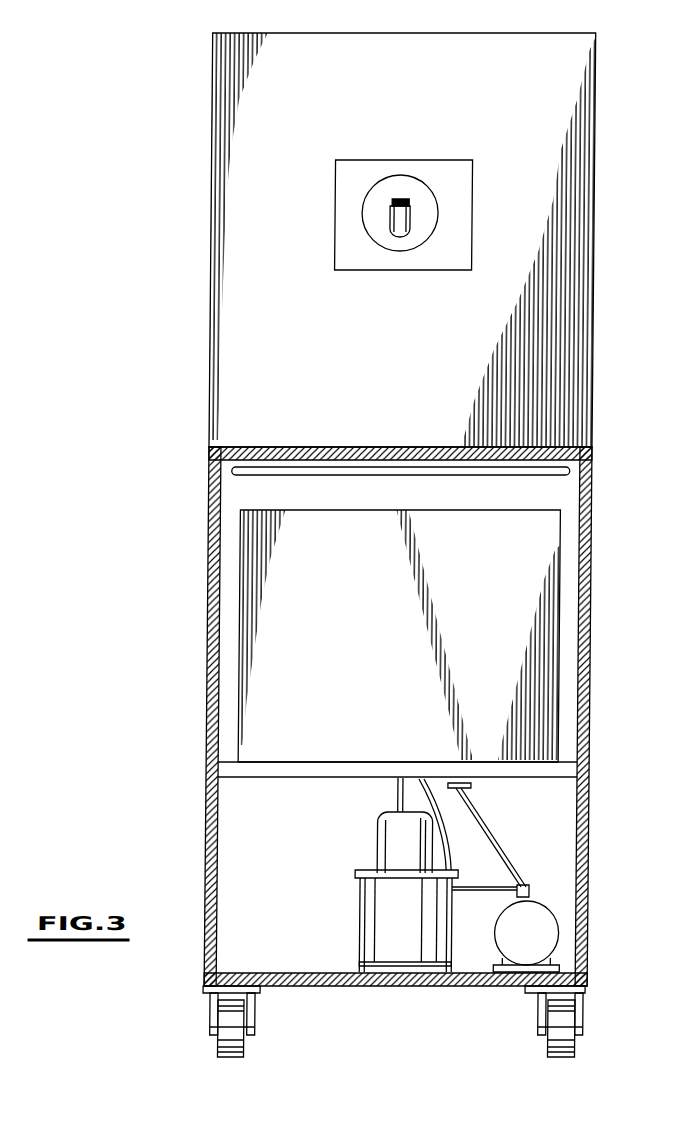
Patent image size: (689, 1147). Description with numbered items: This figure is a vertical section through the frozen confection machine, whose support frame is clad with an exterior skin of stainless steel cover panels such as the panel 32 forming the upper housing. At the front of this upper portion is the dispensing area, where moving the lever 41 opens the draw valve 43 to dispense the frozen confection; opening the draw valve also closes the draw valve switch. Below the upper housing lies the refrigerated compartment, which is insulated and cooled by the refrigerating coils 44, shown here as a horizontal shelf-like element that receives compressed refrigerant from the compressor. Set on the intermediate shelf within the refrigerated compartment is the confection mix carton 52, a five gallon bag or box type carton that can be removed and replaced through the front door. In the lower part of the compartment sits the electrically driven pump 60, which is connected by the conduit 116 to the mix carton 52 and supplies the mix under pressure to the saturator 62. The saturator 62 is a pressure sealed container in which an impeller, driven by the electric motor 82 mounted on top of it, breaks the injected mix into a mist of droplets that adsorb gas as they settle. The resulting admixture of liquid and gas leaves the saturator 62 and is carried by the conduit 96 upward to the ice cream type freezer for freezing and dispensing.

The panel 32 is at (538, 112).
The lever 41 is at (403, 199).
The draw valve 43 is at (405, 226).
The refrigerating coils 44 is at (575, 472).
The carton 52 is at (343, 659).
The conduit 96 is at (403, 789).
The electric motor 82 is at (420, 857).
The saturator 62 is at (426, 921).
The conduit 116 is at (495, 838).
The pump 60 is at (550, 944).